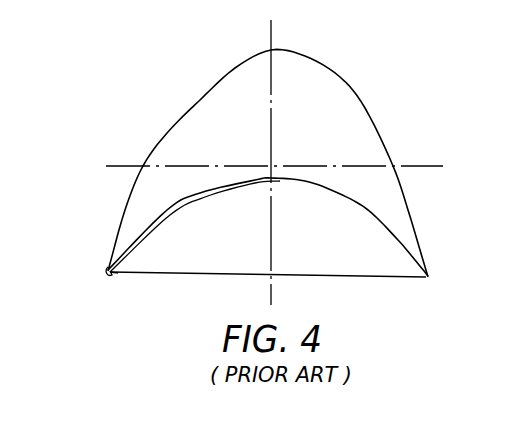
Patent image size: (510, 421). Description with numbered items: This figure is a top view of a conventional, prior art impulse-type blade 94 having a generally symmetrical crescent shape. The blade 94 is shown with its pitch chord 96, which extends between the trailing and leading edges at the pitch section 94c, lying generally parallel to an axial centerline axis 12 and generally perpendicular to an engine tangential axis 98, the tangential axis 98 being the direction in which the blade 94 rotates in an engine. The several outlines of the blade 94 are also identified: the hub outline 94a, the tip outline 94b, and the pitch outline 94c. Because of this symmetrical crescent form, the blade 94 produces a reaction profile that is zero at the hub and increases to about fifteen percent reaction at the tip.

The axial centerline axis 12 is at (413, 166).
The impulse-type blade 94 is at (369, 104).
The hub outline 94a is at (109, 278).
The tip outline 94b is at (107, 260).
The pitch outline 94c is at (105, 268).
The pitch chord 96 is at (247, 271).
The engine tangential axis 98 is at (272, 40).